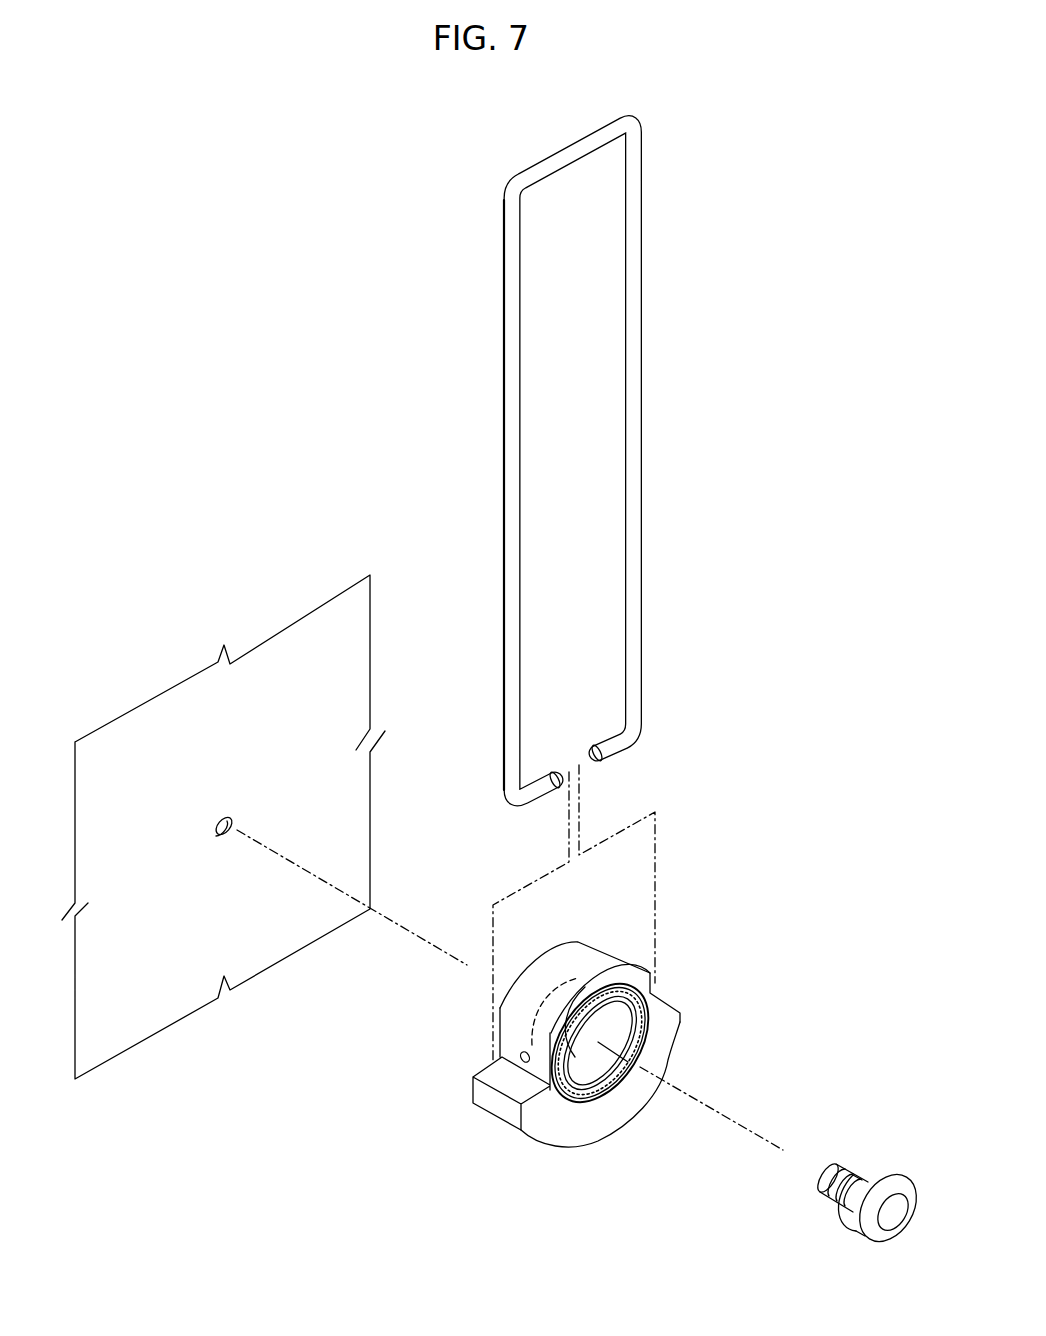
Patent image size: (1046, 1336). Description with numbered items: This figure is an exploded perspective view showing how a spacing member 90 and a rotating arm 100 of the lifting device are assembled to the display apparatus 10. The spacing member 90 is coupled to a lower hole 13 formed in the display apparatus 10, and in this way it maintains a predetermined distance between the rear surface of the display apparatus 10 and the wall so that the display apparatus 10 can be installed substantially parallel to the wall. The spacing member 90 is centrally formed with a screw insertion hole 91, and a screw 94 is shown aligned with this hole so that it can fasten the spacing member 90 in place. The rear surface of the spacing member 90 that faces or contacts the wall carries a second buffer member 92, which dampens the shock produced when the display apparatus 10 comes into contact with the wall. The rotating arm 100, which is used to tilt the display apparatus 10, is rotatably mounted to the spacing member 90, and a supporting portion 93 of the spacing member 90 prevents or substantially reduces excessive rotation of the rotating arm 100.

The display apparatus 10 is at (104, 692).
The lower hole 13 is at (236, 822).
The rotating arm 100 is at (635, 375).
The spacing member 90 is at (575, 1016).
The screw insertion hole 91 is at (585, 987).
The second buffer member 92 is at (651, 1038).
The supporting portion 93 is at (521, 1057).
The screw 94 is at (846, 1170).